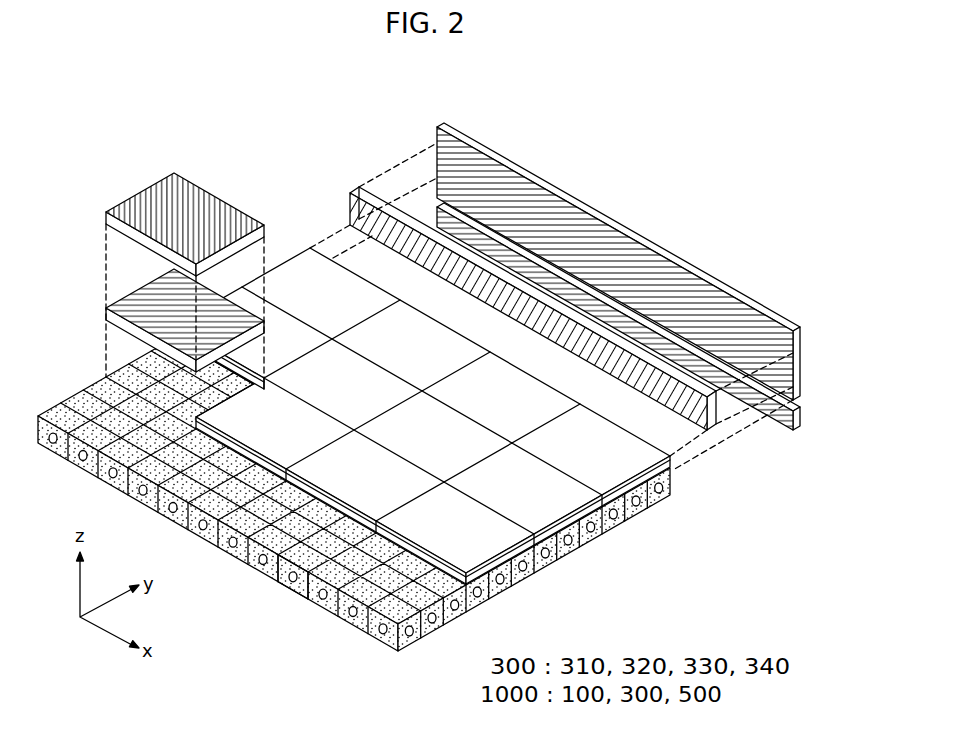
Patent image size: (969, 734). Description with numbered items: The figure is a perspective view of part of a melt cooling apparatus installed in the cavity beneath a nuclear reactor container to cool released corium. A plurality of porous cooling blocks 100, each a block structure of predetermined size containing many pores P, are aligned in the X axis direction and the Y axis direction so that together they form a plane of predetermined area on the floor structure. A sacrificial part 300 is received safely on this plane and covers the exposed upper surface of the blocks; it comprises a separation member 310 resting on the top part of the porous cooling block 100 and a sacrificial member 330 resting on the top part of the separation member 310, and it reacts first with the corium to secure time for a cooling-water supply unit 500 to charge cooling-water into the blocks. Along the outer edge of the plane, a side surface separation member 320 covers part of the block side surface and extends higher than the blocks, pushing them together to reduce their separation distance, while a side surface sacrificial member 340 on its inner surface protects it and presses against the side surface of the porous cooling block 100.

The porous cooling block 100 is at (374, 638).
The sacrificial part 300 is at (422, 416).
The separation member 310 is at (130, 295).
The side surface separation member 320 is at (488, 107).
The sacrificial member 330 is at (145, 188).
The side surface sacrificial member 340 is at (350, 192).
The cooling-water supply unit 500 is at (618, 316).
The pore P is at (278, 562).